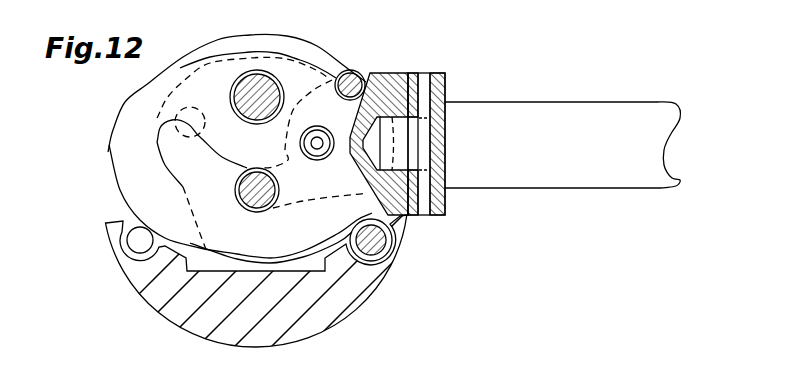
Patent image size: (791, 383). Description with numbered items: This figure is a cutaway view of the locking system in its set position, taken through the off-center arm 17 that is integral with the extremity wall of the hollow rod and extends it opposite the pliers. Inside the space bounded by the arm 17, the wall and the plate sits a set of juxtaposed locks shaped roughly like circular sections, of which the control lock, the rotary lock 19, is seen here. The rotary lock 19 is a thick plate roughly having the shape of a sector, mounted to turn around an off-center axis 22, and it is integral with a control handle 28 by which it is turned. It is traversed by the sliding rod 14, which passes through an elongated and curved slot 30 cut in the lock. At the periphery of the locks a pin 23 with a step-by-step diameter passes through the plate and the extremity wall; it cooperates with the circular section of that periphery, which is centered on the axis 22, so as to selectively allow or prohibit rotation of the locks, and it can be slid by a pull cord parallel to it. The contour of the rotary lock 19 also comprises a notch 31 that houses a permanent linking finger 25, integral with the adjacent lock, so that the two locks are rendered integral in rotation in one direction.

The sliding rod 14 is at (263, 197).
The arm 17 is at (200, 313).
The rotary lock 19 is at (137, 111).
The axis 22 is at (260, 84).
The pin 23 is at (381, 248).
The permanent linking finger 25 is at (343, 72).
The control handle 28 is at (545, 117).
The elongated and curved slot 30 is at (201, 178).
The notch 31 is at (371, 90).